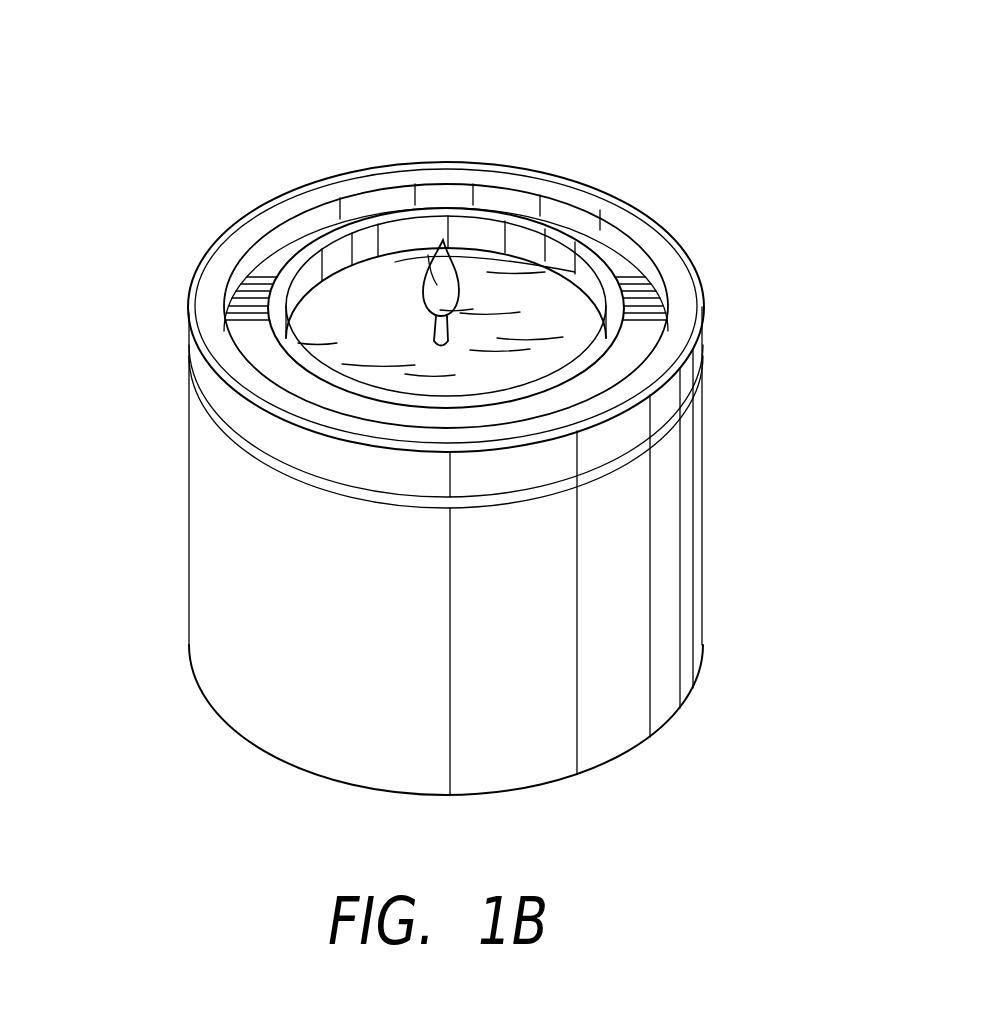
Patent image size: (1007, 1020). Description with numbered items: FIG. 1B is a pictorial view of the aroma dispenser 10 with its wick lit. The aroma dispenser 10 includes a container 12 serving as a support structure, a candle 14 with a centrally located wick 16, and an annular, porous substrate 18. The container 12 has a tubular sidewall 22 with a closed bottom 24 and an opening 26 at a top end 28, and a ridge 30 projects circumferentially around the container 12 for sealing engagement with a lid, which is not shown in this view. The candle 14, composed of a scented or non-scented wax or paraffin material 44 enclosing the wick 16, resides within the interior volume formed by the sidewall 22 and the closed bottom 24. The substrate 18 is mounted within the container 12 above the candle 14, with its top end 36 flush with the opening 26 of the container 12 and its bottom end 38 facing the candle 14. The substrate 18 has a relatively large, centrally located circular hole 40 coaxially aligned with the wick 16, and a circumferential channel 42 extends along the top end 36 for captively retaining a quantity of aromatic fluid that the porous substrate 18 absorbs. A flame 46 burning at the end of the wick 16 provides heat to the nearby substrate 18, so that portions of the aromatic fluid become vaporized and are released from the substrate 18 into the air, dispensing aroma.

The aroma dispenser 10 is at (796, 188).
The container 12 is at (714, 489).
The candle 14 is at (310, 327).
The wick 16 is at (432, 327).
The annular, porous substrate 18 is at (634, 223).
The tubular sidewall 22 is at (652, 623).
The closed bottom 24 is at (512, 793).
The opening 26 is at (242, 236).
The top end 28 is at (548, 56).
The ridge 30 is at (215, 428).
The top end 36 is at (277, 217).
The bottom end 38 is at (353, 285).
The circular hole 40 is at (517, 300).
The circumferential channel 42 is at (657, 292).
The wax or paraffin material 44 is at (578, 333).
The flame 46 is at (443, 240).